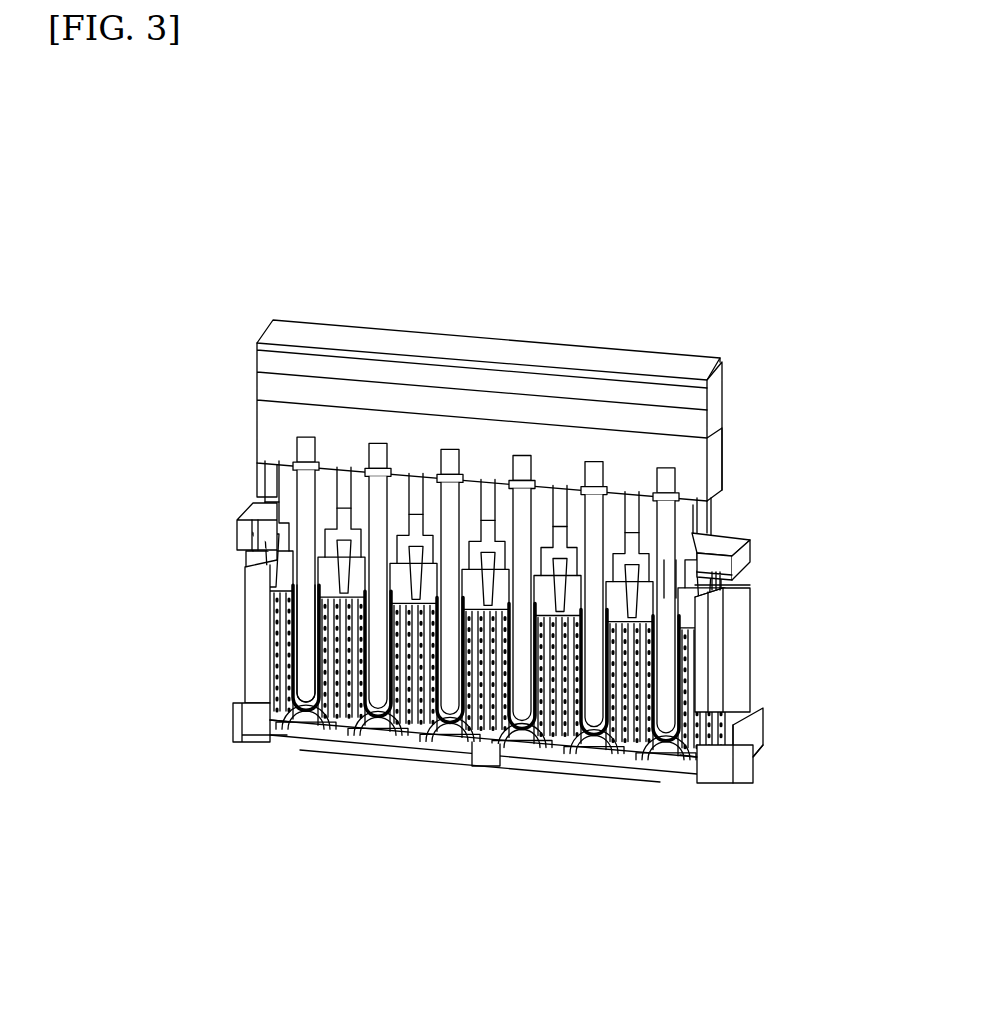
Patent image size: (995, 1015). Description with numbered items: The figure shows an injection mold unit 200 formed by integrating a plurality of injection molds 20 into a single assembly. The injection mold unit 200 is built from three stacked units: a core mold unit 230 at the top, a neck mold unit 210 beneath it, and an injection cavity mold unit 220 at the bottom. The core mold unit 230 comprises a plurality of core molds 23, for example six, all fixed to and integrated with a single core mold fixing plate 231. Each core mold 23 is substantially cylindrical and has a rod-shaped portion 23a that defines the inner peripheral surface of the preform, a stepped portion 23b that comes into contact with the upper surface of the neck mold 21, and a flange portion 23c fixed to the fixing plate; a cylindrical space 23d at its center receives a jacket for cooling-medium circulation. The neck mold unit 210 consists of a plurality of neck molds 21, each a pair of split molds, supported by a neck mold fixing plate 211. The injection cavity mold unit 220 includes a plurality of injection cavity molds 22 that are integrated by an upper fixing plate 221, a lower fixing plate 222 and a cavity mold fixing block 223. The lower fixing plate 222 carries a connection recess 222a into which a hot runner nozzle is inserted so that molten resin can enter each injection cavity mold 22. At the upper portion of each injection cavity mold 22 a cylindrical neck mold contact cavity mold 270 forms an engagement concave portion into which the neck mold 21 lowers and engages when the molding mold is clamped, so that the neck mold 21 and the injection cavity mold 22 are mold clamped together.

The injection mold unit 200 is at (715, 226).
The injection mold 20 is at (663, 822).
The neck mold 21 is at (703, 570).
The injection cavity mold 22 is at (645, 745).
The core mold 23 is at (170, 495).
The rod-shaped portion 23a is at (277, 560).
The stepped portion 23b is at (270, 515).
The flange portion 23c is at (277, 478).
The cylindrical space 23d is at (300, 655).
The neck mold unit 210 is at (772, 555).
The neck mold fixing plate 211 is at (718, 535).
The injection cavity mold unit 220 is at (772, 638).
The upper fixing plate 221 is at (703, 596).
The lower fixing plate 222 is at (700, 772).
The connection recess 222a is at (285, 745).
The cavity mold fixing block 223 is at (720, 712).
The core mold unit 230 is at (758, 508).
The core mold fixing plate 231 is at (262, 480).
The neck mold contact cavity mold 270 is at (670, 622).